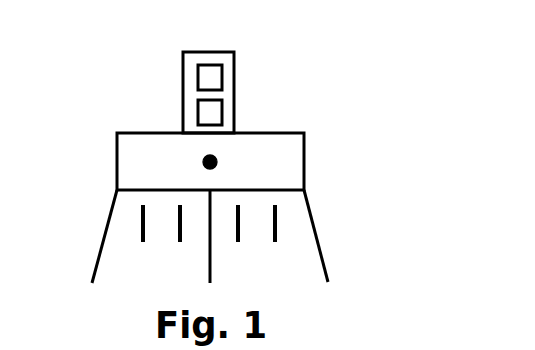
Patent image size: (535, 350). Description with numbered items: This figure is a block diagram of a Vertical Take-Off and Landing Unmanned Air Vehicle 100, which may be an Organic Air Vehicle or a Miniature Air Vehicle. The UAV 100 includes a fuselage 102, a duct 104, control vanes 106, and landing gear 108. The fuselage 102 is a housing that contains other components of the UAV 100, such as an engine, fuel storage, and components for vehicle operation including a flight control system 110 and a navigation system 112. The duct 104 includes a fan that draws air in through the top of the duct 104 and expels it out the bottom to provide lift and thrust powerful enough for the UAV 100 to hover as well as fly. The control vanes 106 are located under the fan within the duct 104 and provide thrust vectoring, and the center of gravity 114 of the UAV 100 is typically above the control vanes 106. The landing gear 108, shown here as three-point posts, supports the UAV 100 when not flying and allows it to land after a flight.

The Vertical Take-Off and Landing Unmanned Air Vehicle 100 is at (388, 70).
The fuselage 102 is at (234, 67).
The duct 104 is at (304, 158).
The control vanes 106 is at (273, 213).
The landing gear 108 is at (321, 252).
The flight control system 110 is at (198, 102).
The navigation system 112 is at (198, 69).
The center of gravity 114 is at (203, 160).